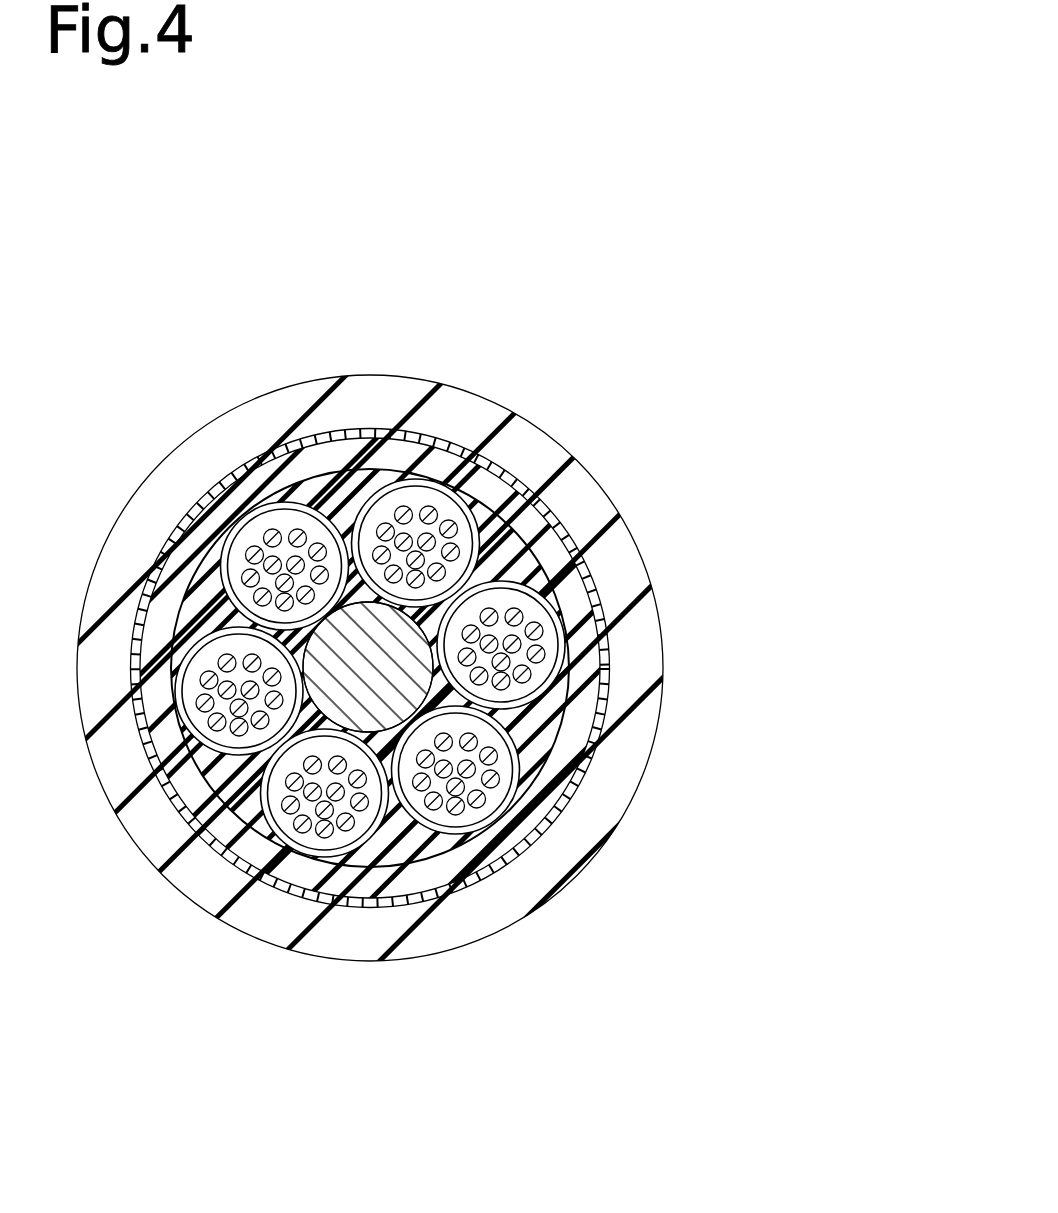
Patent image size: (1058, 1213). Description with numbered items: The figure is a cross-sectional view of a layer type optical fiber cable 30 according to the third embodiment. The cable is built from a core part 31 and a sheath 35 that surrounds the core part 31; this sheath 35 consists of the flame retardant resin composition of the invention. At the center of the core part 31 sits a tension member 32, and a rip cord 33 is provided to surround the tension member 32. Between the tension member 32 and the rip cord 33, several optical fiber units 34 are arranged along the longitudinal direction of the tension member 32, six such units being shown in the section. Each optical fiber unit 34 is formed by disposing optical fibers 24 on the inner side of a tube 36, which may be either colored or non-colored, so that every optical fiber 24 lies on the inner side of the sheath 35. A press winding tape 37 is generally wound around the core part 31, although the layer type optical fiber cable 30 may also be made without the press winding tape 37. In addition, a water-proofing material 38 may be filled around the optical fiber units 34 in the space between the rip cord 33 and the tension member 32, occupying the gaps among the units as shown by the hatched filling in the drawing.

The layer type optical fiber cable 30 is at (548, 262).
The core part 31 is at (873, 433).
The tension member 32 is at (433, 596).
The optical fiber 24 is at (387, 638).
The optical fiber unit 34 is at (778, 542).
The tube 36 is at (560, 680).
The rip cord 33 is at (565, 782).
The sheath 35 is at (440, 935).
The press winding tape 37 is at (331, 908).
The water-proofing material 38 is at (223, 790).